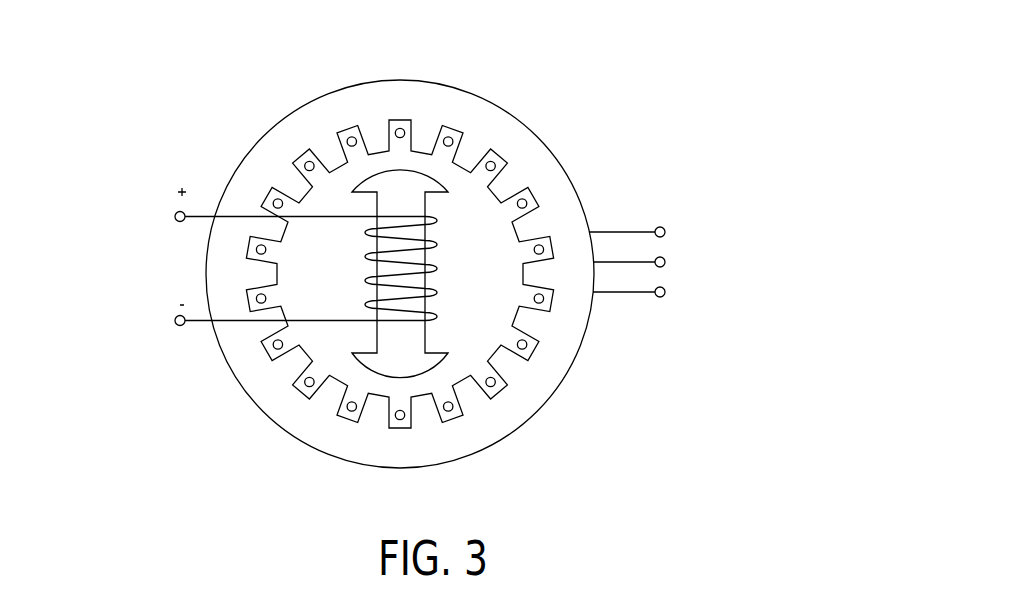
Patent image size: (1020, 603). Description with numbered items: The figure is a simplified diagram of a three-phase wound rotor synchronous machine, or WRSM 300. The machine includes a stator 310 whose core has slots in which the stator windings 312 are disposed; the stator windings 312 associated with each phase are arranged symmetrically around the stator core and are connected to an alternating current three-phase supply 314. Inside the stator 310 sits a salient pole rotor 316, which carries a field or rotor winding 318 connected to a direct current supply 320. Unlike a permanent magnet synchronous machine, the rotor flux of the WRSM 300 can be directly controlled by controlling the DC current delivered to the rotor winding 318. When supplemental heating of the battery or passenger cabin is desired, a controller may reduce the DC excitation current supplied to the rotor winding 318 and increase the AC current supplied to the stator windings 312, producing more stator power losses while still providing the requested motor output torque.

The three-phase WRSM 300 is at (545, 90).
The stator 310 is at (506, 161).
The stator windings 312 is at (503, 382).
The alternating current (AC) three-phase supply 314 is at (674, 214).
The salient pole rotor 316 is at (415, 353).
The field or rotor winding 318 is at (363, 287).
The direct current (DC) supply 320 is at (166, 211).